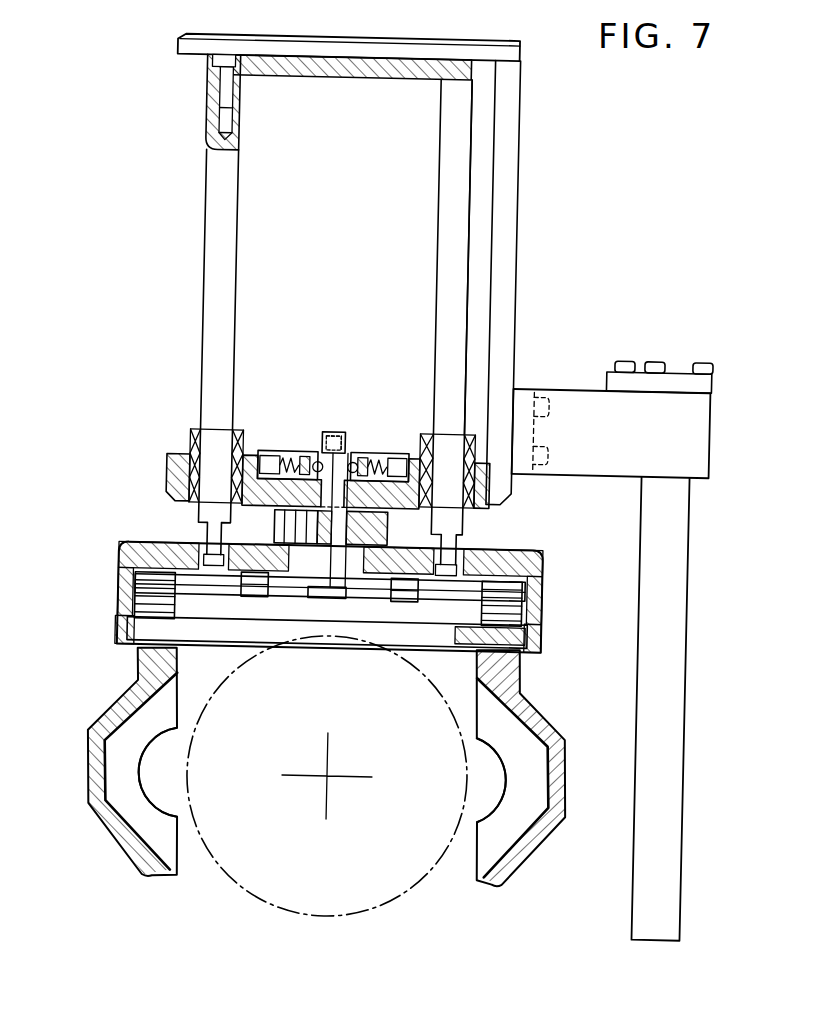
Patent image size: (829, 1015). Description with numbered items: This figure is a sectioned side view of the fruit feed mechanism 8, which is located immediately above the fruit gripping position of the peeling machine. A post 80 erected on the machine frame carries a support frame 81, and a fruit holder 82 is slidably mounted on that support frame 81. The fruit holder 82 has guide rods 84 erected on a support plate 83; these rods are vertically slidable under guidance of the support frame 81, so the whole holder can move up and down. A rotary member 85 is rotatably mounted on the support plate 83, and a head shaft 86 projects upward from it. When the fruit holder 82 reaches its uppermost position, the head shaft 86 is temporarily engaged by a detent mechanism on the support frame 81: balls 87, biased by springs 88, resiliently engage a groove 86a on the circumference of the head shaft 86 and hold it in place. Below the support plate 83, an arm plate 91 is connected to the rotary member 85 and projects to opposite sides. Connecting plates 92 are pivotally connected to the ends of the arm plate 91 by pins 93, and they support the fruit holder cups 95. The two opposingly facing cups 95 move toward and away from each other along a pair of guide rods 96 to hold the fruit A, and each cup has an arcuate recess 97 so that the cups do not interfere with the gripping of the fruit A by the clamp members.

The fruit feed mechanism 8 is at (115, 492).
The post 80 is at (689, 547).
The support frame 81 is at (509, 326).
The fruit holder 82 is at (113, 577).
The support plate 83 is at (161, 557).
The guide rods 84 is at (222, 289).
The rotary member 85 is at (287, 521).
The head shaft 86 is at (346, 445).
The groove 86a is at (321, 447).
The balls 87 is at (314, 460).
The springs 88 is at (279, 453).
The arm plate 91 is at (300, 589).
The connecting plates 92 is at (195, 591).
The pins 93 is at (255, 599).
The fruit holder cups 95 is at (96, 795).
The guide rods 96 is at (228, 642).
The arcuate recesses 97 is at (155, 807).
The fruit A is at (371, 911).